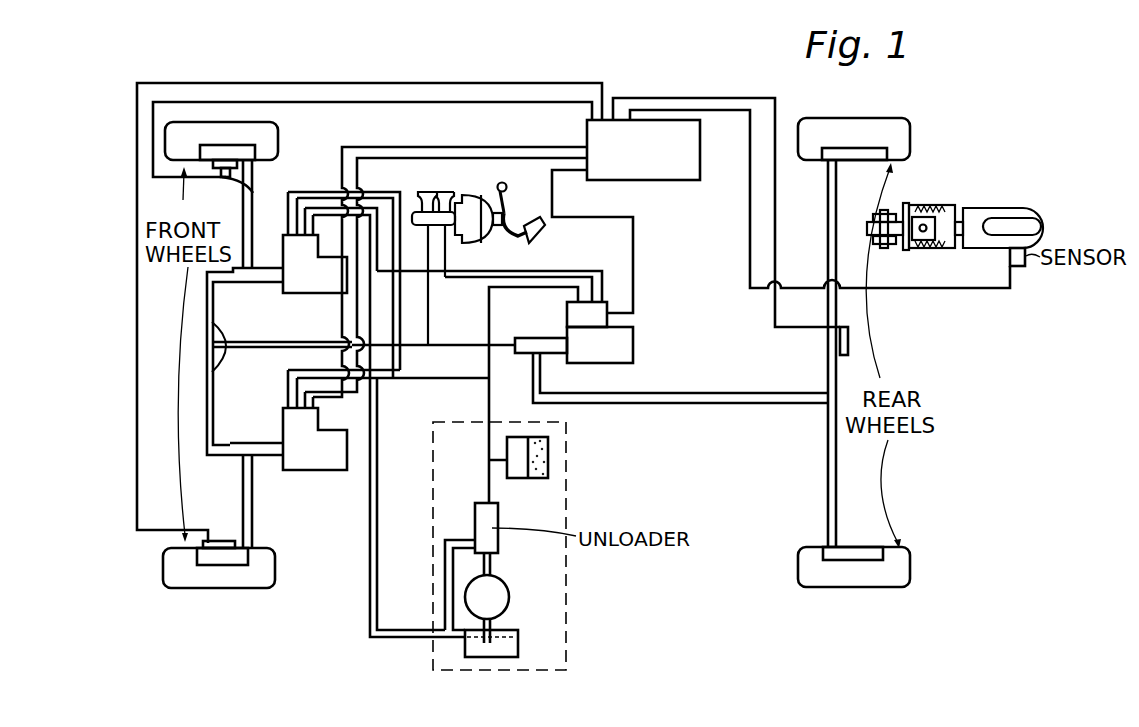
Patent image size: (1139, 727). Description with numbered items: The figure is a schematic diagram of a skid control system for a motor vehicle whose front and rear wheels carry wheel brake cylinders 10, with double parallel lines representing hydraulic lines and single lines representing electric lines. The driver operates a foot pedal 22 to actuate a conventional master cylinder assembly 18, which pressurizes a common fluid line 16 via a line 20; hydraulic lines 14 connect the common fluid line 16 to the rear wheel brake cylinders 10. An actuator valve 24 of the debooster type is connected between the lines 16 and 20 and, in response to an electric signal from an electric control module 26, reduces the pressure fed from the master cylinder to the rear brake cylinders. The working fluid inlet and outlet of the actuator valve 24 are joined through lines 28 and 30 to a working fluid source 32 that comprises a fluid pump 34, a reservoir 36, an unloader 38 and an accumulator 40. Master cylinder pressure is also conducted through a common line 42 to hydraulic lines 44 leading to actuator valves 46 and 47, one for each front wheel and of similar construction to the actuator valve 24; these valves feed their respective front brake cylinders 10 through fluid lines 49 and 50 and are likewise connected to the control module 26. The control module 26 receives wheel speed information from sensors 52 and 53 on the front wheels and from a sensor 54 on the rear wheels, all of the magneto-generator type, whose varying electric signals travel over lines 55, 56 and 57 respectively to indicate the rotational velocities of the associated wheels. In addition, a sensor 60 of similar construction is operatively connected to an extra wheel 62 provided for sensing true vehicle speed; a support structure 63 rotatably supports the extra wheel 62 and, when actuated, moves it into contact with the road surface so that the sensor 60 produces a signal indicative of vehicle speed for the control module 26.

The wheel brake cylinders 10 is at (245, 145).
The hydraulic lines 14 is at (827, 415).
The common fluid line 16 is at (668, 405).
The master cylinder assembly 18 is at (458, 194).
The line 20 is at (443, 321).
The foot pedal 22 is at (547, 236).
The actuator valve 24 is at (640, 336).
The electric control module 26 is at (706, 180).
The line 28 is at (510, 288).
The line 30 is at (553, 278).
The working fluid source 32 is at (566, 488).
The fluid pump 34 is at (510, 598).
The reservoir 36 is at (519, 638).
The unloader 38 is at (499, 541).
The accumulator 40 is at (536, 479).
The common line 42 is at (287, 342).
The hydraulic lines 44 is at (239, 358).
The actuator valve 46 is at (270, 254).
The actuator valve 47 is at (270, 436).
The fluid line 49 is at (255, 186).
The fluid line 50 is at (254, 519).
The sensor 52 is at (253, 187).
The sensor 53 is at (218, 541).
The sensor 54 is at (838, 336).
The line 55 is at (394, 147).
The line 56 is at (432, 158).
The line 57 is at (776, 206).
The sensor 60 is at (1022, 267).
The extra wheel 62 is at (997, 222).
The support structure 63 is at (976, 183).